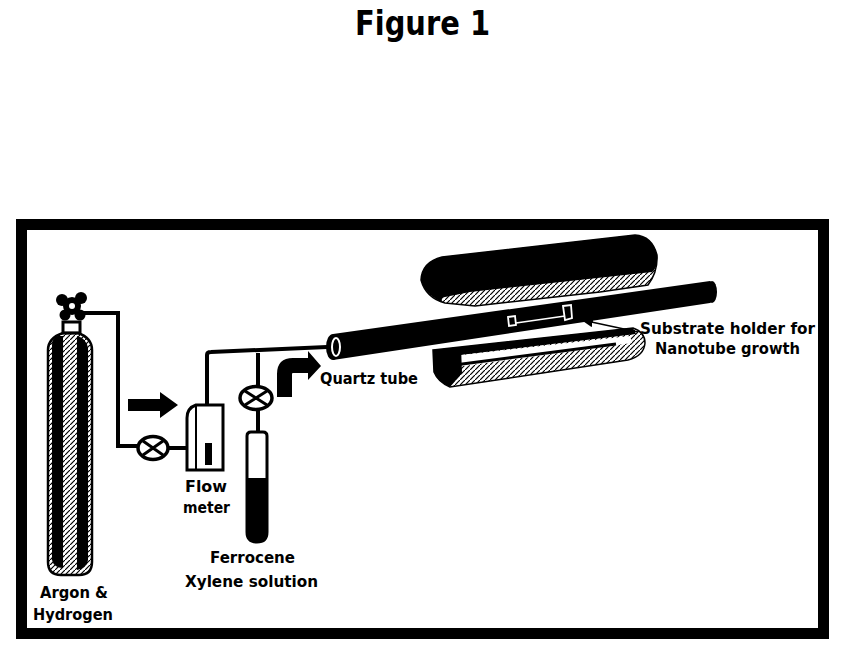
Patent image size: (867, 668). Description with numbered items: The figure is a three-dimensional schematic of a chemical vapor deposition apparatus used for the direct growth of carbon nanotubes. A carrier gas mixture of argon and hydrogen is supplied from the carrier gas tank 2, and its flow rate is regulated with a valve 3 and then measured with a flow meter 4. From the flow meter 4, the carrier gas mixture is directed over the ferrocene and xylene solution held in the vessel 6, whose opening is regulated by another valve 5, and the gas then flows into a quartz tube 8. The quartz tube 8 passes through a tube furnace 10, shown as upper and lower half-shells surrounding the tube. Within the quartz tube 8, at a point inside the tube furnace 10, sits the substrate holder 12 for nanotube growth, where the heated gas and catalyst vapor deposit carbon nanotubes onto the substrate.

The carrier gas tank 2 is at (88, 319).
The valve 3 is at (147, 469).
The flow meter 4 is at (193, 397).
The valve 5 is at (283, 410).
The vessel 6 is at (280, 515).
The quartz tube 8 is at (375, 323).
The tube furnace 10 is at (667, 252).
The substrate holder 12 is at (573, 329).